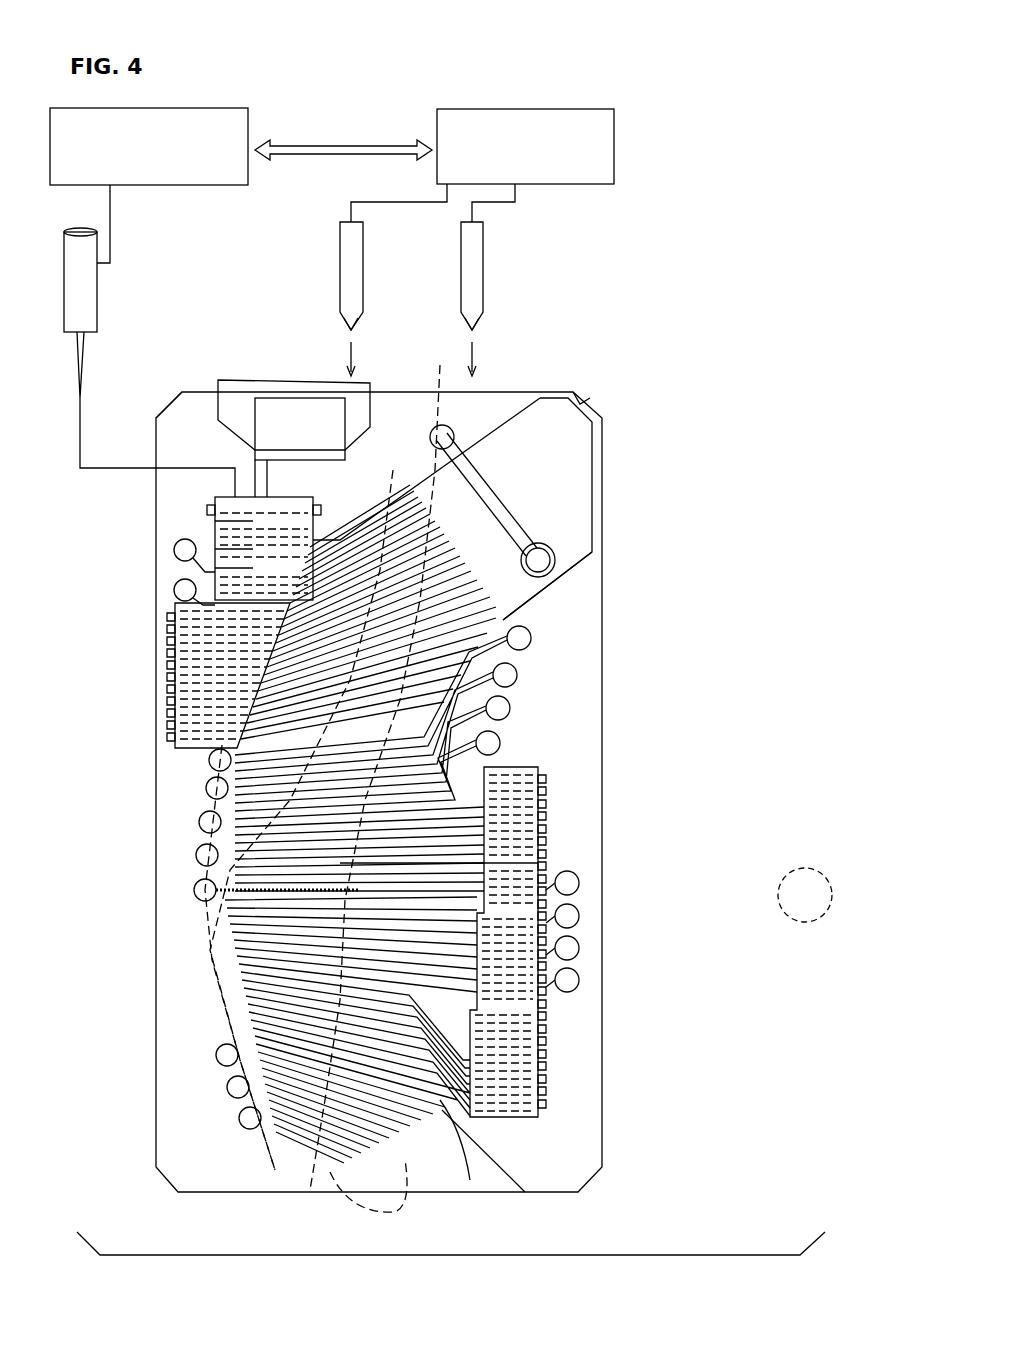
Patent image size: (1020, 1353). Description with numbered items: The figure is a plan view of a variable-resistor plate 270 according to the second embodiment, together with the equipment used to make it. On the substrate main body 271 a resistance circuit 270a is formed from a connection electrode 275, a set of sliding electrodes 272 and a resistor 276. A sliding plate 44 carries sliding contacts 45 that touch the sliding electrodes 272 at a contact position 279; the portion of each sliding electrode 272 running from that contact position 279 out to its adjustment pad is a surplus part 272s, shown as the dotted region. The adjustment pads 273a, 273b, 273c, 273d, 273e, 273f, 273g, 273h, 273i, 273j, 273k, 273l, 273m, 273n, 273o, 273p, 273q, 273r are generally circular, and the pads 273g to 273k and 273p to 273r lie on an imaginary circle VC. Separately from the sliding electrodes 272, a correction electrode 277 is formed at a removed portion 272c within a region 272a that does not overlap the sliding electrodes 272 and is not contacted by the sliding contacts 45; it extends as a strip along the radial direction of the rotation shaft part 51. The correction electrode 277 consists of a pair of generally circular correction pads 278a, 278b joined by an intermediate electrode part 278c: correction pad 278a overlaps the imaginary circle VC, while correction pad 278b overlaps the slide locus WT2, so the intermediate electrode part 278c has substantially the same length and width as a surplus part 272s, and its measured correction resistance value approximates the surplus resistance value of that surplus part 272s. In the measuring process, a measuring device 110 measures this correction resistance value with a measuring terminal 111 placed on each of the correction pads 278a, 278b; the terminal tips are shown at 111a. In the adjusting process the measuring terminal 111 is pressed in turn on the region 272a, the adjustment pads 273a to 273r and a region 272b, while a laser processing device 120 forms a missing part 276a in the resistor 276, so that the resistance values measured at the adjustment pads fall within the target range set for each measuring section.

The laser processing device 120 is at (250, 123).
The measuring device 110 is at (614, 123).
The measuring terminal 111 is at (363, 264).
The probe tip 111a is at (347, 330).
The imaginary circle VC is at (412, 352).
The variable-resistor plate 270 is at (522, 392).
The resistance circuit 270a is at (582, 402).
The substrate main body 271 is at (182, 448).
The connection electrode 275 is at (294, 410).
The missing part 276a is at (215, 517).
The resistor 276 is at (178, 640).
The sliding electrodes 272 is at (393, 470).
The region 272a is at (560, 490).
The region 272b is at (442, 1177).
The removed portion 272c is at (596, 562).
The surplus part 272s is at (215, 925).
The correction electrode 277 is at (440, 426).
The correction pad 278a is at (455, 437).
The correction pad 278b is at (548, 548).
The intermediate electrode part 278c is at (490, 468).
The adjustment pad 273a is at (174, 552).
The adjustment pad 273b is at (174, 590).
The adjustment pad 273c is at (531, 638).
The adjustment pad 273d is at (517, 675).
The adjustment pad 273e is at (510, 708).
The adjustment pad 273f is at (500, 743).
The adjustment pad 273g is at (209, 761).
The adjustment pad 273h is at (206, 790).
The adjustment pad 273i is at (199, 823).
The adjustment pad 273j is at (196, 856).
The adjustment pad 273k is at (194, 890).
The adjustment pad 273l is at (580, 883).
The adjustment pad 273m is at (580, 916).
The adjustment pad 273n is at (580, 948).
The adjustment pad 273o is at (580, 980).
The adjustment pad 273p is at (216, 1055).
The adjustment pad 273q is at (227, 1087).
The adjustment pad 273r is at (239, 1118).
The contact position 279 is at (500, 864).
The sliding plate 44 is at (205, 965).
The sliding contacts 45 is at (400, 1192).
The rotation shaft part 51 is at (803, 868).
The slide locus WT2 is at (470, 1180).